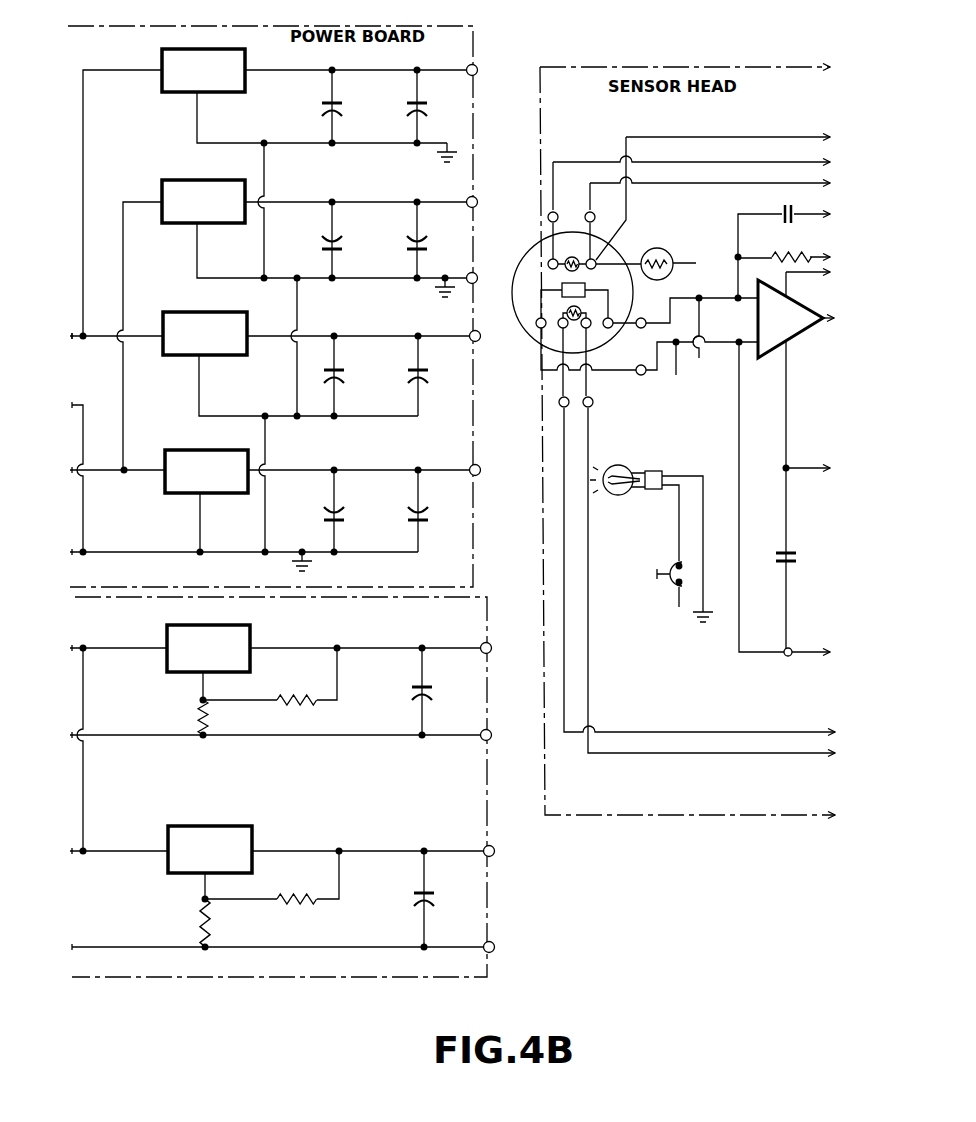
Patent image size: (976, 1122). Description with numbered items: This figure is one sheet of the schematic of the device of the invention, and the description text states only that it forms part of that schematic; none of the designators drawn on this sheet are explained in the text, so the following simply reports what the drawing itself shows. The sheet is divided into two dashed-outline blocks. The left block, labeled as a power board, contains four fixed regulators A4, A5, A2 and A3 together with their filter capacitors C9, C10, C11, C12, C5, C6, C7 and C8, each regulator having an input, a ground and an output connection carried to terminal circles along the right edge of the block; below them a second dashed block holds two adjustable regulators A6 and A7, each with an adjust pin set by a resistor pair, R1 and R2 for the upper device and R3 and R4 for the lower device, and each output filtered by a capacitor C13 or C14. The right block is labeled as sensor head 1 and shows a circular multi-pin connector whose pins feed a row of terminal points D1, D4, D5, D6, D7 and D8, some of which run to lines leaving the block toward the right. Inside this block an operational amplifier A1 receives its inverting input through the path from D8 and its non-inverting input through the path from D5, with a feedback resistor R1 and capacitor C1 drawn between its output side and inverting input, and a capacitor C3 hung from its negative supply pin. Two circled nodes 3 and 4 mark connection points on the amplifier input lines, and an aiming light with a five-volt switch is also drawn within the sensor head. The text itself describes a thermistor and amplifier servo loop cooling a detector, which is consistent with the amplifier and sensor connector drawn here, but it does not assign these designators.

The sensor head 1 is at (673, 415).
The connection point 3 is at (676, 368).
The connection point 4 is at (699, 338).
The operational amplifier A1 is at (788, 462).
The LM7815 voltage regulator A2 is at (272, 352).
The LM7915 CT voltage regulator A3 is at (272, 499).
The LM7815 voltage regulator A4 is at (272, 183).
The LM7915 CT voltage regulator A5 is at (282, 313).
The LM338K adjustable regulator A6 is at (278, 727).
The LM338K adjustable regulator A7 is at (279, 876).
The capacitor C1 is at (784, 222).
The capacitor C3 is at (775, 548).
The capacitor C5 is at (346, 376).
The electrolytic capacitor C6 is at (420, 376).
The capacitor C7 is at (346, 511).
The electrolytic capacitor C8 is at (420, 511).
The capacitor C9 is at (344, 106).
The electrolytic capacitor C10 is at (423, 106).
The capacitor C11 is at (349, 240).
The electrolytic capacitor C12 is at (423, 240).
The electrolytic capacitor C13 is at (430, 691).
The electrolytic capacitor C14 is at (432, 899).
The resistor R1 is at (270, 676).
The resistor R2 is at (218, 717).
The resistor R3 is at (272, 877).
The resistor R4 is at (220, 923).
The sensor terminal / thermistor D1 is at (565, 225).
The sensor terminal D4 is at (602, 225).
The sensor terminal D5 is at (649, 351).
The sensor terminal D6 is at (686, 530).
The sensor terminal D7 is at (709, 540).
The sensor terminal D8 is at (685, 313).